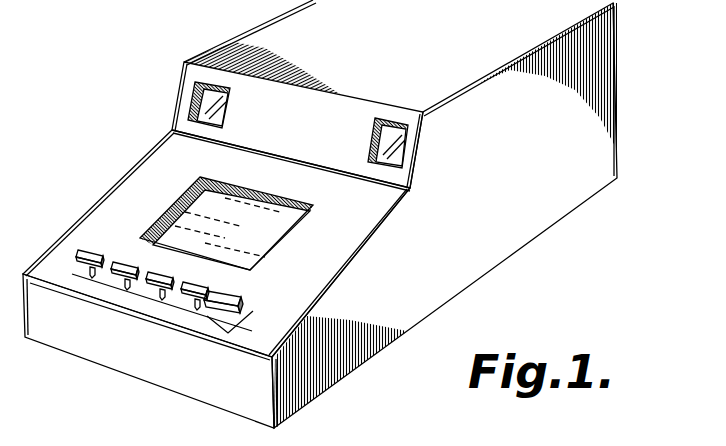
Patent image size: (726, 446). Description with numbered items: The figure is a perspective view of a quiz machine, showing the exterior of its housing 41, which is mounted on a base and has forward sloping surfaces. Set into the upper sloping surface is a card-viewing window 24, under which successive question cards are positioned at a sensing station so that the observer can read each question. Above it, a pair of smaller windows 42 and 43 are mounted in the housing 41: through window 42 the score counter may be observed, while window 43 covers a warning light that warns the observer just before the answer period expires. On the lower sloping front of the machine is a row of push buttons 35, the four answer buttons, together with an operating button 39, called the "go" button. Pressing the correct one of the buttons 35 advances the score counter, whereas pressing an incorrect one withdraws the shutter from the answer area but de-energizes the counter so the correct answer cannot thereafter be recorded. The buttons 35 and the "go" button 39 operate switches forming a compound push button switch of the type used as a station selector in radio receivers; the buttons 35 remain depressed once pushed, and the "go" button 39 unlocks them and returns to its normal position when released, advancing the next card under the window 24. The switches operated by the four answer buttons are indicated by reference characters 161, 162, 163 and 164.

The viewing window 24 is at (187, 197).
The push buttons 35 is at (184, 299).
The operating button 39 is at (240, 293).
The housing 41 is at (520, 236).
The window 42 is at (207, 99).
The window 43 is at (397, 147).
The switch 161 is at (80, 252).
The switch 162 is at (127, 262).
The switch 163 is at (162, 272).
The switch 164 is at (200, 288).